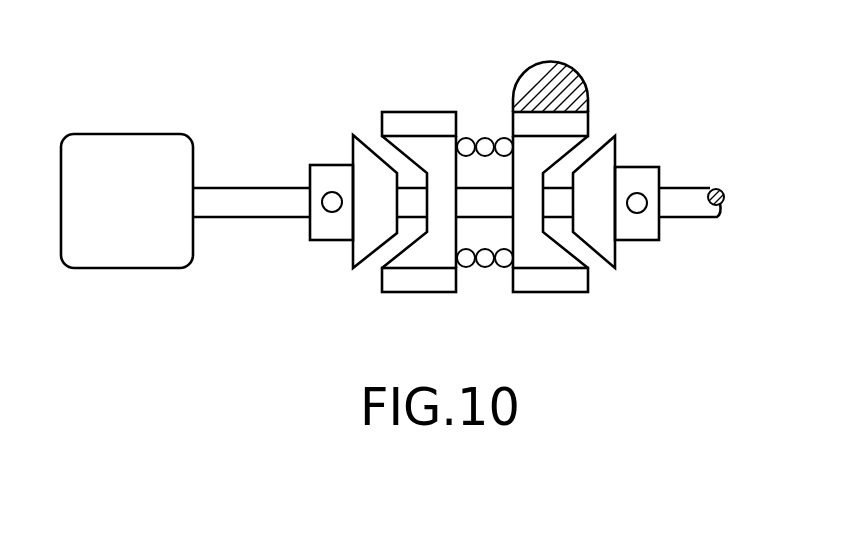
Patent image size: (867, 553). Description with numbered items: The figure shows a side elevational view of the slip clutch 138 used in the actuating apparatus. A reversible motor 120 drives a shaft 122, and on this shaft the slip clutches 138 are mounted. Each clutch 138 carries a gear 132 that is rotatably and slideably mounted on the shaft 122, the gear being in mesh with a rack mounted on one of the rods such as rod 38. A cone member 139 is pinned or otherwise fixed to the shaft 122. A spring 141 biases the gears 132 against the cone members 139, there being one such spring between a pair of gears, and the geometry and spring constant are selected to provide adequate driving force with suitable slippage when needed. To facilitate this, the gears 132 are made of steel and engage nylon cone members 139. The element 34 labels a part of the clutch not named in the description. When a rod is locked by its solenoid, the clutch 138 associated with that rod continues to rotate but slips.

The motor 120 is at (133, 134).
The shaft 122 is at (275, 187).
The gear 132 is at (438, 285).
The friction ring 34 is at (392, 128).
The rod 38 is at (557, 60).
The slip clutch 138 is at (479, 185).
The cone member 139 is at (367, 245).
The spring 141 is at (483, 138).